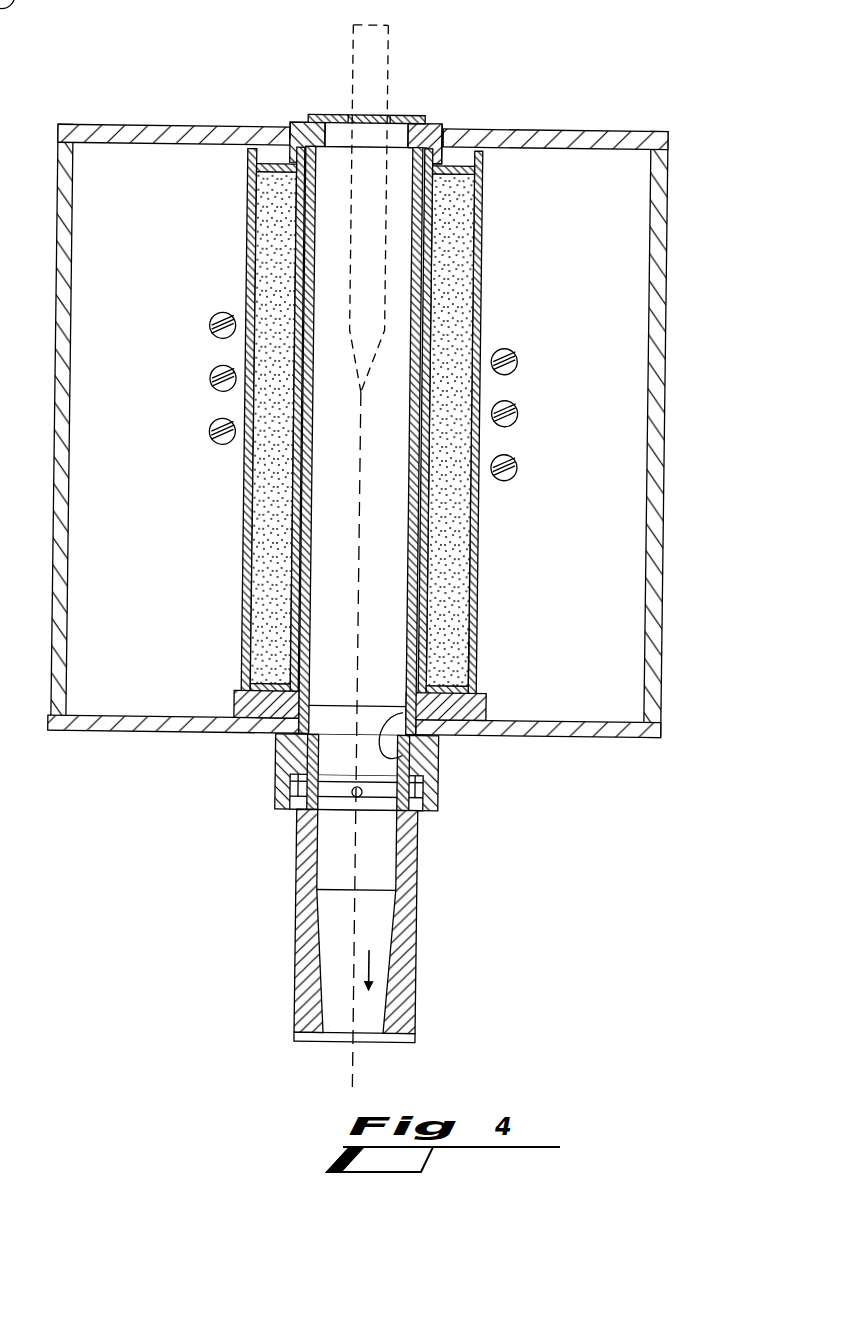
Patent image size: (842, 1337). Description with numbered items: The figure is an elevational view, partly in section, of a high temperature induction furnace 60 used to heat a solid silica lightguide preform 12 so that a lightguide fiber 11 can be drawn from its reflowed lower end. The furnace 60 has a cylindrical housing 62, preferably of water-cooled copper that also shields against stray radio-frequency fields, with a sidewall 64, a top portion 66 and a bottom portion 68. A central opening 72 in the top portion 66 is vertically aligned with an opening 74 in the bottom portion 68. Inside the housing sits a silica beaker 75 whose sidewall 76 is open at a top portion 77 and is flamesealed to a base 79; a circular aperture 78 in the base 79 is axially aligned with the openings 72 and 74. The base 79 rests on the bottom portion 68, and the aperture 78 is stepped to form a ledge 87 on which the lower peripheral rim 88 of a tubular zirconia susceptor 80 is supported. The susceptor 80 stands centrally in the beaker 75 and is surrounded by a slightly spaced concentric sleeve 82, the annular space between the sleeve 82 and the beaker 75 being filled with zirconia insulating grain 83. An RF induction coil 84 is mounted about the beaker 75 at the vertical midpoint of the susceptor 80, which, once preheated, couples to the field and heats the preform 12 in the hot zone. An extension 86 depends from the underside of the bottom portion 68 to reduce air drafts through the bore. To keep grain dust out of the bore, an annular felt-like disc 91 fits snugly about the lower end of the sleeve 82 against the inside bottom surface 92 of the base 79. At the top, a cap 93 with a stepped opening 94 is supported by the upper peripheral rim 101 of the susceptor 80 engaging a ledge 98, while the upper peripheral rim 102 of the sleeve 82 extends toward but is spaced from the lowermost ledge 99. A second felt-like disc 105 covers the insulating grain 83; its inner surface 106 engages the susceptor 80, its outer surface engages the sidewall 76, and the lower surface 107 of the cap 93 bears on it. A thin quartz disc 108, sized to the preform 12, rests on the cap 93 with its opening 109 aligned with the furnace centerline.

The lightguide fiber 11 is at (350, 1087).
The lightguide preform 12 is at (388, 50).
The induction furnace 60 is at (614, 86).
The housing 62 is at (670, 262).
The sidewall 64 is at (662, 525).
The top portion 66 is at (200, 126).
The bottom portion 68 is at (170, 728).
The central opening 72 is at (290, 130).
The opening 74 is at (434, 750).
The silica beaker 75 is at (486, 303).
The beaker sidewall 76 is at (480, 655).
The top portion of beaker 77 is at (484, 160).
The circular aperture 78 is at (394, 714).
The beaker base 79 is at (405, 757).
The tubular susceptor 80 is at (410, 532).
The sleeve 82 is at (437, 537).
The zirconia insulating grain 83 is at (465, 598).
The RF induction coil 84 is at (521, 468).
The extension 86 is at (296, 877).
The ledge 87 is at (317, 708).
The lower peripheral rim 88 is at (393, 703).
The annular felt-like disc 91 is at (462, 688).
The inside bottom surface 92 is at (282, 685).
The cap 93 is at (426, 122).
The opening 94 is at (401, 115).
The ledge 98 is at (410, 148).
The ledge 99 is at (297, 155).
The upper peripheral rim of susceptor 101 is at (440, 122).
The upper peripheral rim of sleeve 102 is at (442, 130).
The second annular felt-like disc 105 is at (458, 178).
The inner surface 106 is at (297, 173).
The lower surface 107 is at (302, 121).
The quartz disc 108 is at (333, 115).
The opening 109 is at (357, 114).